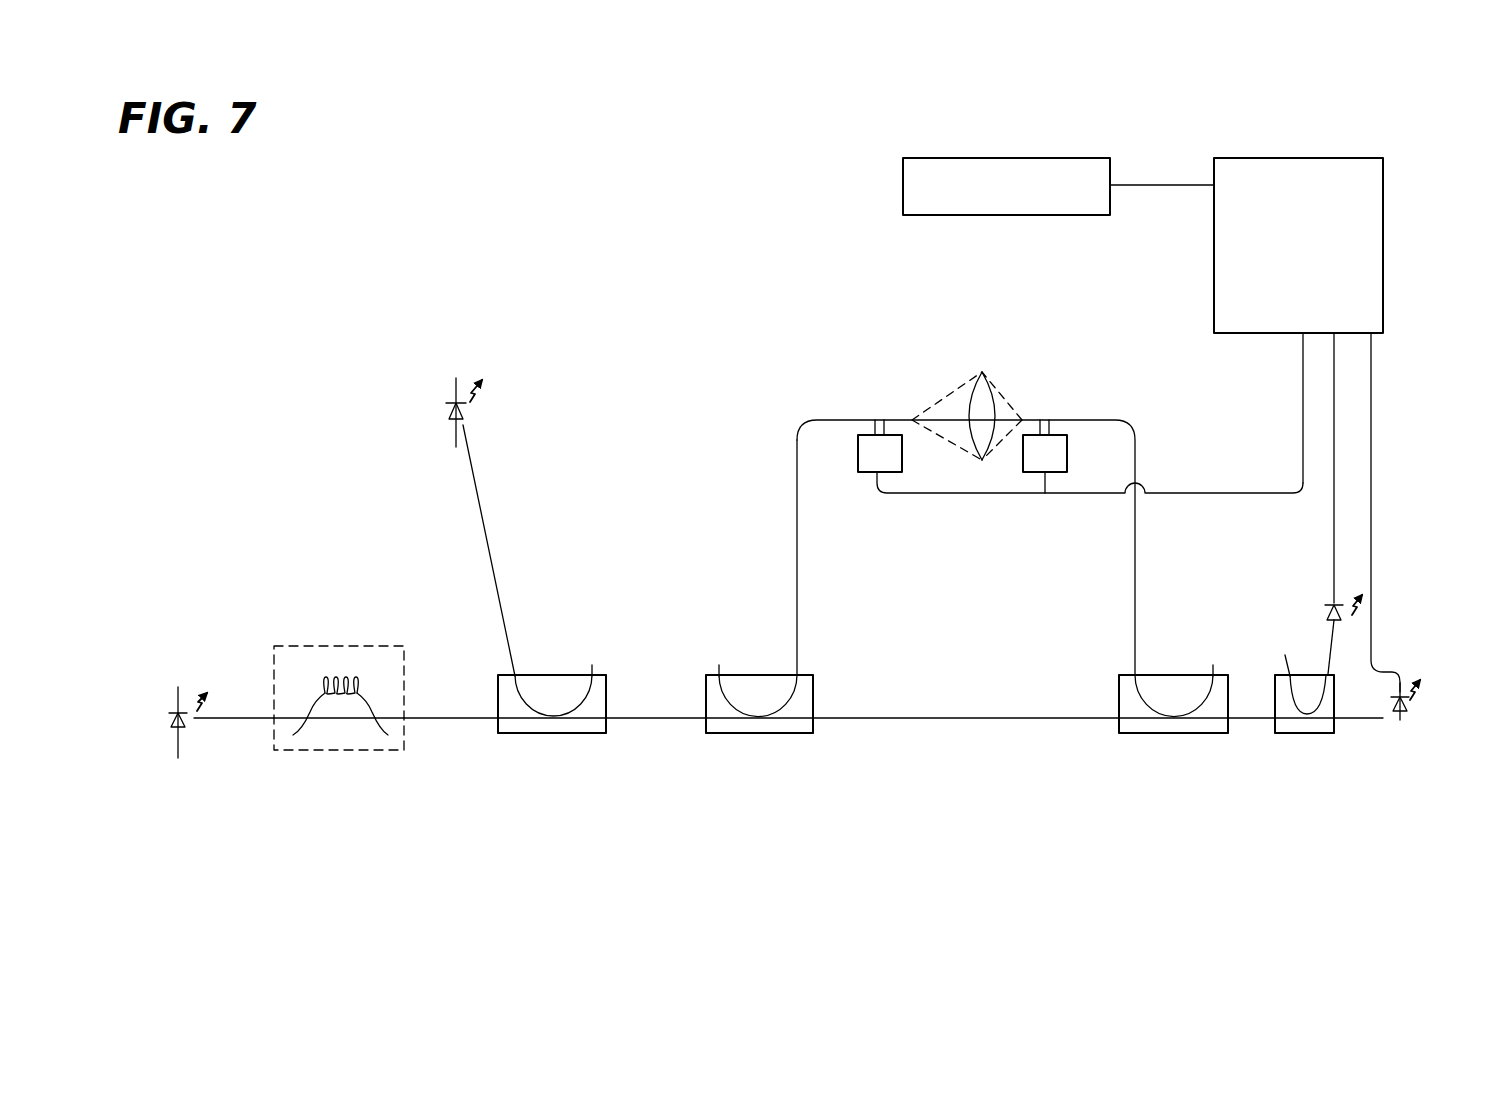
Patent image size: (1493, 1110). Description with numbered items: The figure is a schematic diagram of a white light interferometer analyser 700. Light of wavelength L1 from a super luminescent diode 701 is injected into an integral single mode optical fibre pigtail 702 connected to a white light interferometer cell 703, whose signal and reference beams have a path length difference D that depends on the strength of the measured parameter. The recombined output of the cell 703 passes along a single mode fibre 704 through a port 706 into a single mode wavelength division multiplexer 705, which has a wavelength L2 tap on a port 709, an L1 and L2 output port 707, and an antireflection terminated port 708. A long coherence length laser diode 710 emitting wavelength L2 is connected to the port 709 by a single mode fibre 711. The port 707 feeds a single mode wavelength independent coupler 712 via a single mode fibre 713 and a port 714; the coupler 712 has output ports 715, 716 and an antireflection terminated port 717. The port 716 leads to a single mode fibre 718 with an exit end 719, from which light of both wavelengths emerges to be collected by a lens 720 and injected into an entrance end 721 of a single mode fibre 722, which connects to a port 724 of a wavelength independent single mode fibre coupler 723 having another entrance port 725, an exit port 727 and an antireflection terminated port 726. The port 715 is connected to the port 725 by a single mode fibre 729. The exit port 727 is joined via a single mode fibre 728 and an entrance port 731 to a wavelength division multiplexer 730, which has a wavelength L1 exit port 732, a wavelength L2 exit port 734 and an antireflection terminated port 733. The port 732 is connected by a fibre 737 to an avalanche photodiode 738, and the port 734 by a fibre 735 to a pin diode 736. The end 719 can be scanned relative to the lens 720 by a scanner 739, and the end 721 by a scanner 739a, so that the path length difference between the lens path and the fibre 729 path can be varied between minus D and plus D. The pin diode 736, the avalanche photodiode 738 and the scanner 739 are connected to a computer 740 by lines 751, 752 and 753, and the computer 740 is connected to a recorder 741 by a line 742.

The white light interferometer analyser 700 is at (386, 240).
The super luminescent diode 701 is at (174, 702).
The integral single mode optical fibre pigtail 702 is at (234, 717).
The white light interferometer cell 703 is at (340, 646).
The single mode fibre 704 is at (450, 723).
The single mode wavelength division multiplexer 705 is at (568, 725).
The port 706 is at (496, 710).
The L1 and L2 output port 707 is at (612, 707).
The port 708 is at (593, 675).
The wavelength L2 tap port 709 is at (516, 677).
The long coherence length laser diode 710 is at (452, 397).
The single mode fibre 711 is at (490, 550).
The single mode wavelength independent coupler 712 is at (765, 725).
The single mode fibre 713 is at (655, 722).
The port 714 is at (703, 722).
The output port 715 is at (815, 732).
The output port 716 is at (812, 680).
The antireflection terminated port 717 is at (720, 675).
The single mode fibre 718 is at (798, 590).
The exit end 719 is at (912, 420).
The lens 720 is at (982, 372).
The entrance end 721 is at (1020, 408).
The single mode fibre 722 is at (1137, 448).
The wavelength independent single mode fibre coupler 723 is at (1165, 725).
The port 724 is at (1137, 675).
The entrance port 725 is at (1120, 722).
The antireflection terminated port 726 is at (1214, 675).
The exit port 727 is at (1238, 723).
The single mode fibre 728 is at (1250, 722).
The single mode fibre 729 is at (997, 722).
The wavelength division multiplexer 730 is at (1320, 725).
The entrance port 731 is at (1265, 723).
The wavelength L1 exit port 732 is at (1345, 723).
The antireflection terminated port 733 is at (1290, 674).
The wavelength L2 exit port 734 is at (1327, 672).
The fibre 735 is at (1340, 640).
The pin diode 736 is at (1345, 606).
The fibre 737 is at (1360, 723).
The avalanche photodiode 738 is at (1405, 712).
The scanner 739 is at (870, 460).
The scanner 739a is at (1032, 462).
The computer 740 is at (1304, 158).
The recorder 741 is at (986, 158).
The line 742 is at (1150, 184).
The line 751 is at (1336, 465).
The line 752 is at (1372, 392).
The line 753 is at (1238, 495).